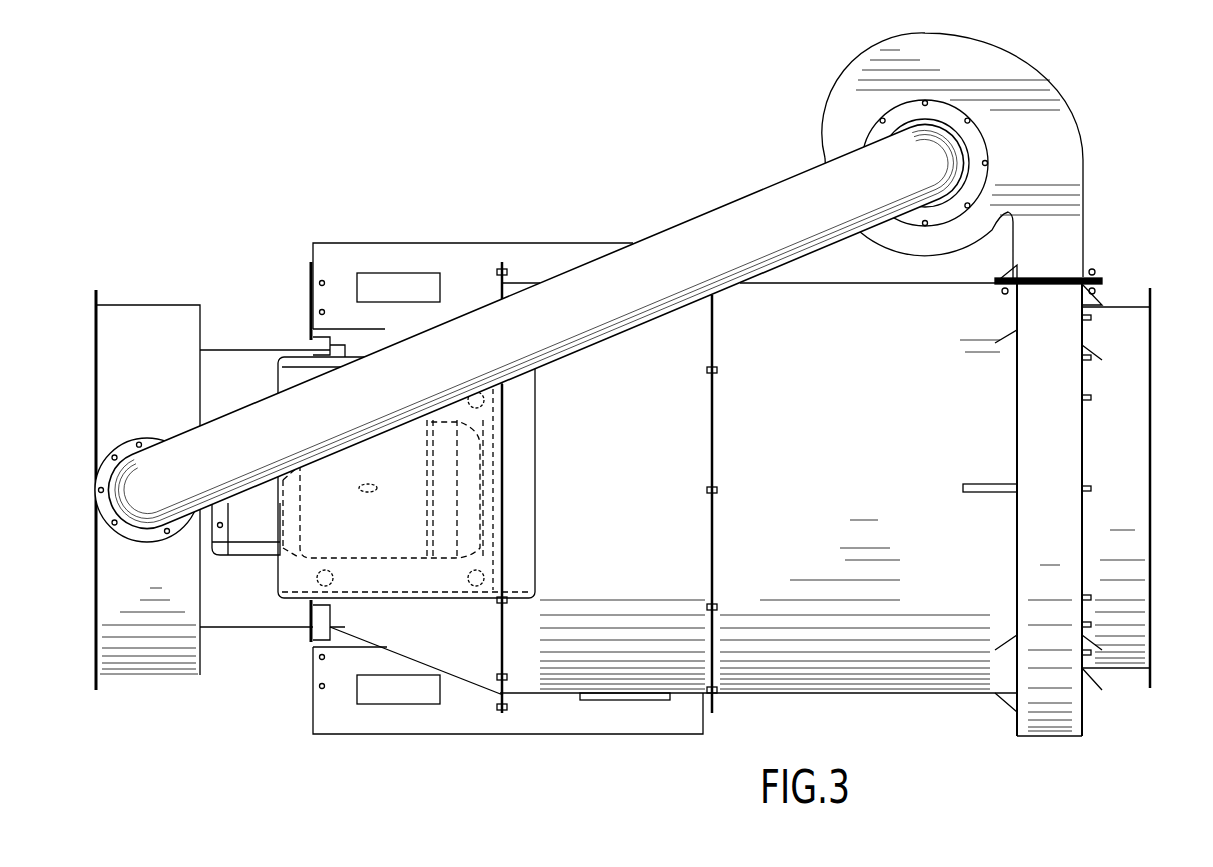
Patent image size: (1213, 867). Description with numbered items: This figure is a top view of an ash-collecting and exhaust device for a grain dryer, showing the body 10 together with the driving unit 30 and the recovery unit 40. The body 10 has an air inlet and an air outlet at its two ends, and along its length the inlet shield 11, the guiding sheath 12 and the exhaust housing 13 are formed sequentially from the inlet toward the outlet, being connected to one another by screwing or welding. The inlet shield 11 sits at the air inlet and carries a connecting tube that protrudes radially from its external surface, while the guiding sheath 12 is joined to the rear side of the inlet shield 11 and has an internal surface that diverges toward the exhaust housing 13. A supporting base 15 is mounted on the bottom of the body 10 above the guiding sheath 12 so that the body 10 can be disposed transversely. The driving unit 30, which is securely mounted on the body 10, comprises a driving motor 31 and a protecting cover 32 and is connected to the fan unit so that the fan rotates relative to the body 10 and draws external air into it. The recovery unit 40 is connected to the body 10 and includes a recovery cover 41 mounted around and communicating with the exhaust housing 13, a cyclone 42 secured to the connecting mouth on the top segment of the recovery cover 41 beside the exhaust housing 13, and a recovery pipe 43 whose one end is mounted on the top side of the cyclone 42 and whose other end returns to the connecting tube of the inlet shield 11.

The body 10 is at (322, 214).
The inlet shield 11 is at (164, 304).
The guiding sheath 12 is at (468, 674).
The exhaust housing 13 is at (928, 698).
The supporting base 15 is at (345, 713).
The driving unit 30 is at (549, 448).
The driving motor 31 is at (472, 513).
The protecting cover 32 is at (258, 523).
The recovery unit 40 is at (1132, 220).
The recovery cover 41 is at (1077, 708).
The cyclone 42 is at (845, 113).
The recovery pipe 43 is at (762, 213).